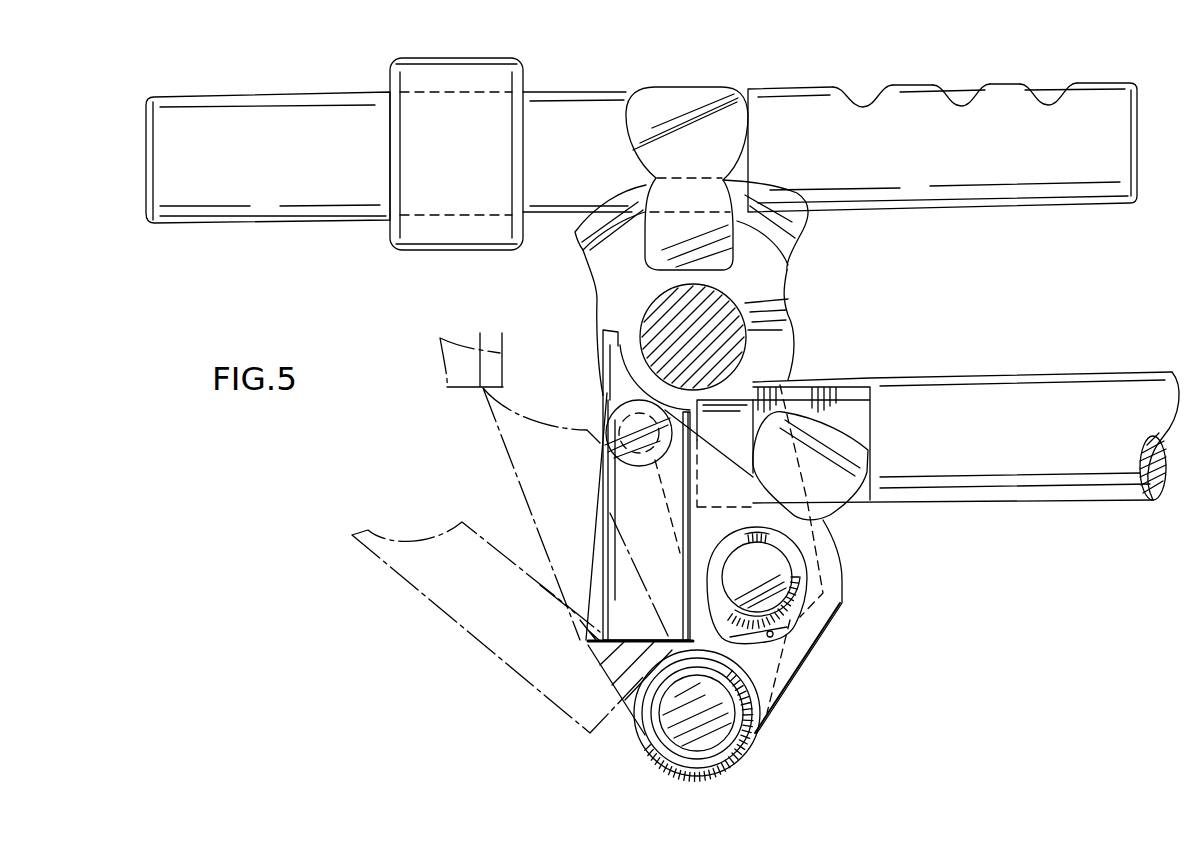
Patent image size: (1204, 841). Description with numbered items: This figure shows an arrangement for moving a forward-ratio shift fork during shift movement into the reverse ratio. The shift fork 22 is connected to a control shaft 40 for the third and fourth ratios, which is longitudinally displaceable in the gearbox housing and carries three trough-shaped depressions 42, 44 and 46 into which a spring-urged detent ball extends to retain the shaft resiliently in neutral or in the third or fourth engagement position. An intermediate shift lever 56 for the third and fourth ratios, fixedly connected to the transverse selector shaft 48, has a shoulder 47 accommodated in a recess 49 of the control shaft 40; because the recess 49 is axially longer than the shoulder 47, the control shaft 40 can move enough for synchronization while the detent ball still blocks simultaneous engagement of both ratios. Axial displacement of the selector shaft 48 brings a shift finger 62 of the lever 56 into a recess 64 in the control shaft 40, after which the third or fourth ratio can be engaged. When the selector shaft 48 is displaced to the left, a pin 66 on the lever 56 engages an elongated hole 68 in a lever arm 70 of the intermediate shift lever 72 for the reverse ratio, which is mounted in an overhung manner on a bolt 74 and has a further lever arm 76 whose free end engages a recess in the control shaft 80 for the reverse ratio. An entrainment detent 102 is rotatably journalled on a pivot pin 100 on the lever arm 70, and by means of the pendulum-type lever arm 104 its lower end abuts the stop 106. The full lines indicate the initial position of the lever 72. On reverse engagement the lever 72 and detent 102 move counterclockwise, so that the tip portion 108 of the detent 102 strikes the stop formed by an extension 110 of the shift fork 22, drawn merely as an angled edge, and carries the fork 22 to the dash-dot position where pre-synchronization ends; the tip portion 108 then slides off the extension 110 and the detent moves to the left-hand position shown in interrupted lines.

The shift fork 22 is at (402, 84).
The 3-4 control shaft 40 is at (565, 110).
The trough-shaped depression 42 is at (861, 105).
The trough-shaped depression 44 is at (956, 105).
The trough-shaped depression 46 is at (1043, 103).
The shoulder 47 is at (592, 243).
The selector shaft 48 is at (760, 305).
The recess 49 is at (806, 213).
The intermediate shift lever 56 is at (785, 333).
The shift finger 62 is at (693, 105).
The recess 64 is at (738, 92).
The pin 66 is at (782, 576).
The elongated hole 68 is at (778, 634).
The lever arm 70 is at (768, 660).
The intermediate shift lever 72 is at (757, 754).
The bolt 74 is at (720, 711).
The further lever arm 76 is at (827, 505).
The control shaft 80 is at (950, 383).
The pivot pin 100 is at (630, 437).
The entrainment detent 102 is at (635, 480).
The lever arm 104 is at (605, 588).
The stop 106 is at (593, 620).
The tip portion 108 is at (607, 347).
The extension 110 is at (458, 350).